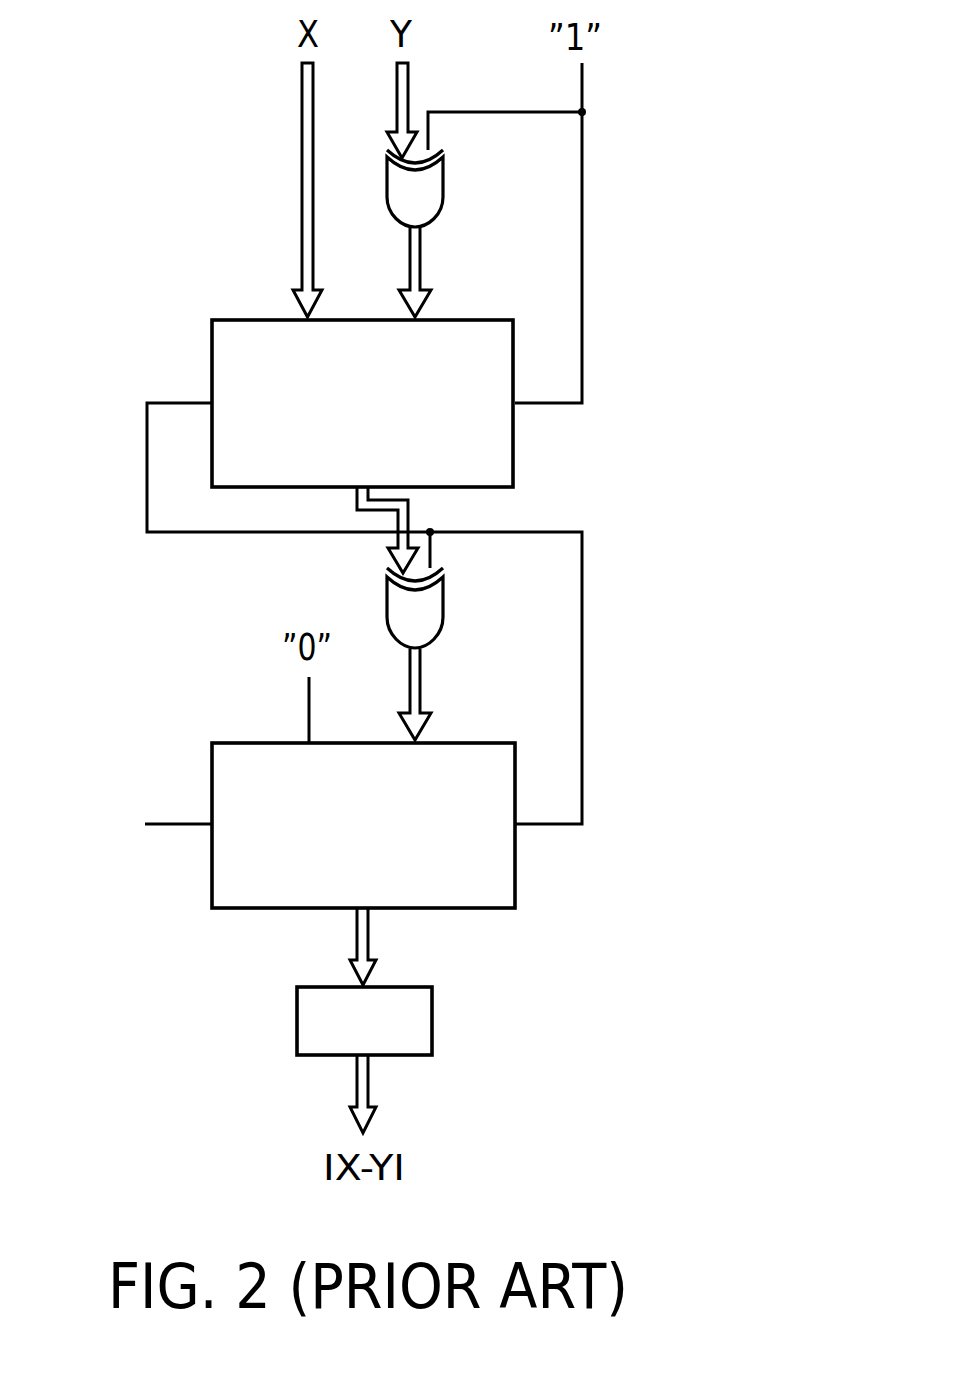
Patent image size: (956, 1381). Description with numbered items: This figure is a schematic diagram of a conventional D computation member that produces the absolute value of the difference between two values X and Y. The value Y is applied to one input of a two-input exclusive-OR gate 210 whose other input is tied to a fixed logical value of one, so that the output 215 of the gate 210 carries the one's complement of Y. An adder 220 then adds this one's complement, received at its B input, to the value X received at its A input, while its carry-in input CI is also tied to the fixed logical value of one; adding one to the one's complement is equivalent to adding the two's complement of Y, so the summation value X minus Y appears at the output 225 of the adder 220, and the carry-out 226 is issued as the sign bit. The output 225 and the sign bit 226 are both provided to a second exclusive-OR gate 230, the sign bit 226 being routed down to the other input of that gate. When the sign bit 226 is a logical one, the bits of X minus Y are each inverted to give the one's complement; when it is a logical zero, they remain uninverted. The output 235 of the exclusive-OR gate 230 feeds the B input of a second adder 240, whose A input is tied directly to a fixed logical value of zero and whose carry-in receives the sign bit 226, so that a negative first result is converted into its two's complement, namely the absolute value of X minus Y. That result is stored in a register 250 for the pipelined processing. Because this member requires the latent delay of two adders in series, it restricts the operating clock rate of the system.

The exclusive-OR gate 210 is at (444, 185).
The output of the gate 215 is at (421, 257).
The adder 220 is at (516, 450).
The output of the adder 225 is at (410, 513).
The carry-out 226 is at (146, 466).
The second exclusive-OR gate 230 is at (444, 605).
The output of the exclusive-OR gate 235 is at (422, 678).
The second adder 240 is at (516, 870).
The register 250 is at (433, 1020).